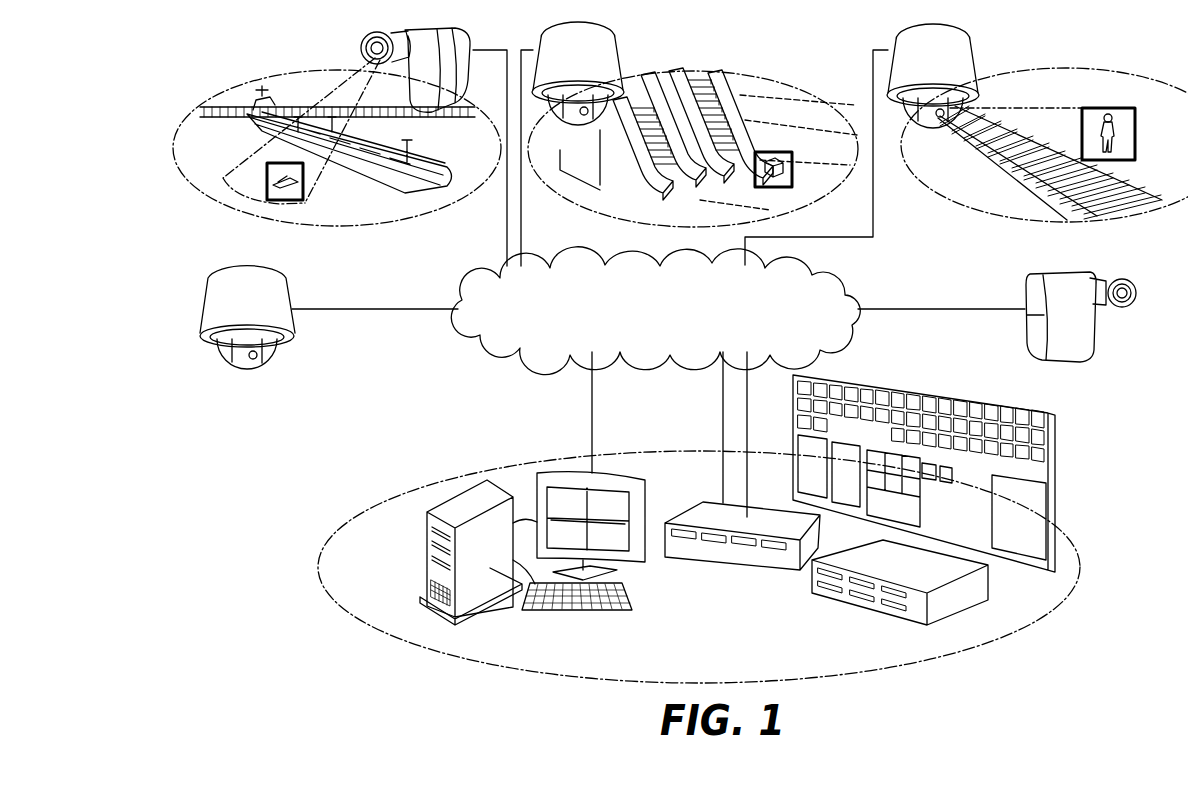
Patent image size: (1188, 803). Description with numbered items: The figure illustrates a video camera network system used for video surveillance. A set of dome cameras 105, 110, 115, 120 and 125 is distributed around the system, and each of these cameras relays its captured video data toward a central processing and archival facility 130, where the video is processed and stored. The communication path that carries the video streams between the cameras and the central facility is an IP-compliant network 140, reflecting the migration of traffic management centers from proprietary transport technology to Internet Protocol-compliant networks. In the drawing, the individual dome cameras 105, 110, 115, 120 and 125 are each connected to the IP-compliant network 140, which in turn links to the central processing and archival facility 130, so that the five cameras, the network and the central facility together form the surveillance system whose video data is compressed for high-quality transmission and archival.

The dome camera 105 is at (203, 304).
The dome camera 110 is at (363, 43).
The dome camera 115 is at (617, 53).
The dome camera 120 is at (970, 44).
The dome camera 125 is at (1024, 295).
The central processing and archival facility 130 is at (417, 485).
The IP-compliant network 140 is at (484, 343).